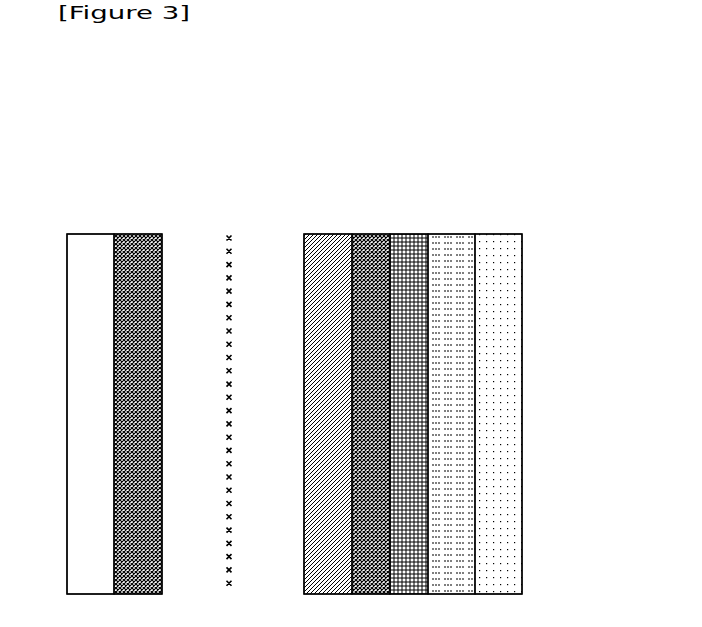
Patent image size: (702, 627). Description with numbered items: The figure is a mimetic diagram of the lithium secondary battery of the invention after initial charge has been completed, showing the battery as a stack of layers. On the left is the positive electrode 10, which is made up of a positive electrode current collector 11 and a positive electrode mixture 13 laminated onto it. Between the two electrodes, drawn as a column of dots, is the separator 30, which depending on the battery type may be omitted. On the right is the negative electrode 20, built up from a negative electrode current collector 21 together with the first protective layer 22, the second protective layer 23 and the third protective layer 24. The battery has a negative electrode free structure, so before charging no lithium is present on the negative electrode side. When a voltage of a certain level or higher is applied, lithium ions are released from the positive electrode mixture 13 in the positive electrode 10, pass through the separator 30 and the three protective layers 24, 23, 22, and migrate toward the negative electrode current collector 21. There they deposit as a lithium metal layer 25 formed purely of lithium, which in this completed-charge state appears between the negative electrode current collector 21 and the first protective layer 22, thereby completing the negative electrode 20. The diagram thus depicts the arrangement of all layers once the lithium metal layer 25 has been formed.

The positive electrode 10 is at (150, 115).
The positive electrode current collector 11 is at (85, 227).
The positive electrode mixture 13 is at (137, 227).
The separator 30 is at (225, 227).
The negative electrode 20 is at (512, 115).
The negative electrode current collector 21 is at (500, 227).
The first protective layer 22 is at (407, 227).
The second protective layer 23 is at (370, 227).
The third protective layer 24 is at (328, 227).
The lithium metal layer 25 is at (448, 227).